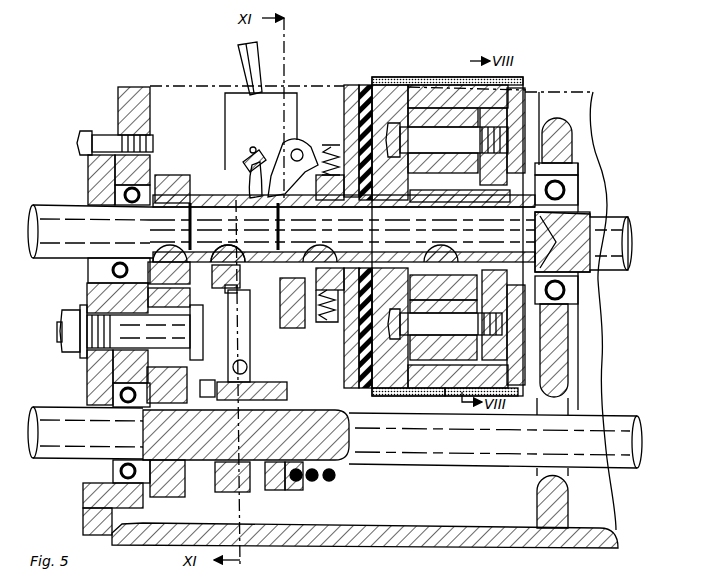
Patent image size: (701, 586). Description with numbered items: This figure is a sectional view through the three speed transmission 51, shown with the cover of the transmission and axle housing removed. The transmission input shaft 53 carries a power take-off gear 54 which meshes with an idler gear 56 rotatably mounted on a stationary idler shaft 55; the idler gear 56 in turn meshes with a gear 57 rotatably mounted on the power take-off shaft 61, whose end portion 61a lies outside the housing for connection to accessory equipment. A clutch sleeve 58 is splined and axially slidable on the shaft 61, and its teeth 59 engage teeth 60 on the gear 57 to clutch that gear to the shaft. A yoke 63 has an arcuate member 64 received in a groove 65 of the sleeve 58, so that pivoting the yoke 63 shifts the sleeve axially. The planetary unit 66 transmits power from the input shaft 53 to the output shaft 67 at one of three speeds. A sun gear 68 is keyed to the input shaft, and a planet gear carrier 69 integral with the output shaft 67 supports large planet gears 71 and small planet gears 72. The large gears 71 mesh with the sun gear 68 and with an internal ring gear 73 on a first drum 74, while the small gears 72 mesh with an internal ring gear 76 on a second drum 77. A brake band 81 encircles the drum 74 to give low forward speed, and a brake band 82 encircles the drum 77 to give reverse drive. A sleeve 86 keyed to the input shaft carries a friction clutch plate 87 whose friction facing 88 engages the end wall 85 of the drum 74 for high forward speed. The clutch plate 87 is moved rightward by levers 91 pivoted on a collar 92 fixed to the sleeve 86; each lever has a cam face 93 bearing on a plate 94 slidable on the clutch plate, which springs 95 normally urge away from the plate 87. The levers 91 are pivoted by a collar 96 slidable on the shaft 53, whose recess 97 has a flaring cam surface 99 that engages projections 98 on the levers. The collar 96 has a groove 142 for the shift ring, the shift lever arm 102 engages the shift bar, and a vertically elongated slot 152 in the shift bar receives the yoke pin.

The three speed transmission 51 is at (414, 74).
The transmission input shaft 53 is at (62, 258).
The power take-off gear 54 is at (160, 177).
The stationary idler shaft 55 is at (185, 338).
The idler gear 56 is at (185, 297).
The gear 57 is at (172, 497).
The clutch sleeve 58 is at (272, 382).
The teeth 59 is at (207, 382).
The teeth 60 is at (228, 492).
The power take-off shaft 61 is at (425, 458).
The end portion 61a is at (56, 452).
The yoke 63 is at (280, 314).
The arcuate member 64 is at (258, 350).
The groove 65 is at (256, 490).
The planetary unit 66 is at (530, 90).
The output shaft 67 is at (614, 222).
The sun gear 68 is at (422, 192).
The planet gear carrier 69 is at (500, 330).
The large planet gears 71 is at (392, 396).
The small planet gears 72 is at (455, 108).
The internal ring gear 73 is at (428, 85).
The first drum 74 is at (366, 86).
The internal ring gear 76 is at (440, 396).
The second drum 77 is at (527, 104).
The brake band 81 is at (390, 77).
The brake band 82 is at (495, 440).
The end wall 85 is at (344, 144).
The sleeve 86 is at (380, 210).
The friction clutch plate 87 is at (345, 100).
The friction facing 88 is at (350, 365).
The lever 91 is at (278, 148).
The collar 92 is at (276, 318).
The cam face 93 is at (318, 140).
The plate 94 is at (324, 322).
The springs 95 is at (333, 326).
The collar 96 is at (215, 276).
The recess 97 is at (236, 290).
The projection 98 is at (256, 163).
The cam surface 99 is at (258, 272).
The arm 102 is at (242, 66).
The groove 142 is at (212, 332).
The slot 152 is at (252, 150).